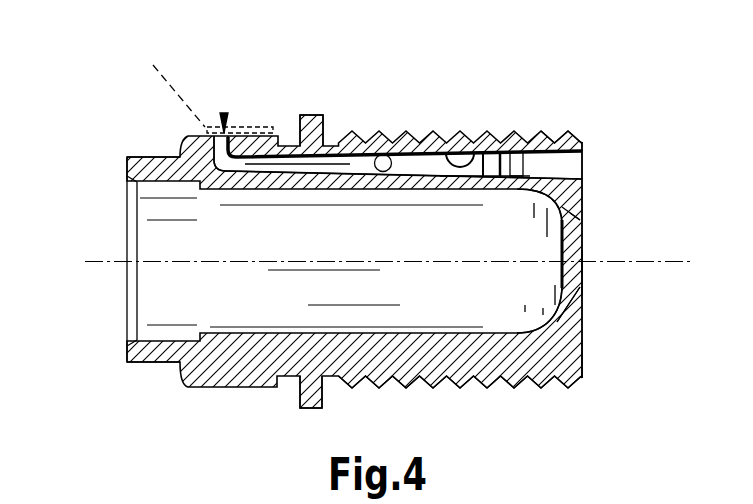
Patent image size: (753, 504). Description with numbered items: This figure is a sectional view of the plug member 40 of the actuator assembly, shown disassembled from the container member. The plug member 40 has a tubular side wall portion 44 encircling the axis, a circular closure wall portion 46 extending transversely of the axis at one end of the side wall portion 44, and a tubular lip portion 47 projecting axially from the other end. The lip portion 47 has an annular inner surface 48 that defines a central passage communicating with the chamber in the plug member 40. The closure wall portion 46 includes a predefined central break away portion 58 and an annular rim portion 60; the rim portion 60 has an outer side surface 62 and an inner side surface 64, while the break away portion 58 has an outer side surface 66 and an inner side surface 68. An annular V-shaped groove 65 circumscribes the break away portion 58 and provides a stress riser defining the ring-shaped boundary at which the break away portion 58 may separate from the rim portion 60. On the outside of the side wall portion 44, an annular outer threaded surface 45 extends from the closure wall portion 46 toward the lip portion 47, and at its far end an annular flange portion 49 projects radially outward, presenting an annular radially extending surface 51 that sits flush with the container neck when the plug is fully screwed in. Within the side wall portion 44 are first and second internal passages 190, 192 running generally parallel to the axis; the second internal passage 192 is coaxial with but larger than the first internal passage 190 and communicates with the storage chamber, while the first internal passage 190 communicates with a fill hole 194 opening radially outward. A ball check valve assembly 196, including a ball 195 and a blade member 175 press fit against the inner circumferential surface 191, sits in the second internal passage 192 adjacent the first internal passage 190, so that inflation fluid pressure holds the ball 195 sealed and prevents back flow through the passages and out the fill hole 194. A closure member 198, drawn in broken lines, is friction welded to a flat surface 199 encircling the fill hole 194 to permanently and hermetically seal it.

The plug member 40 is at (500, 410).
The tubular side wall portion 44 is at (413, 386).
The annular outer threaded surface 45 is at (519, 386).
The circular closure wall portion 46 is at (582, 196).
The tubular lip portion 47 is at (150, 350).
The annular inner surface 48 is at (160, 342).
The annular flange portion 49 is at (304, 115).
The annular radially extending surface 51 is at (298, 395).
The central break away portion 58 is at (578, 246).
The annular rim portion 60 is at (581, 322).
The outer side surface 62 is at (582, 207).
The inner side surface 64 is at (528, 150).
The annular V-shaped groove 65 is at (579, 225).
The outer side surface 66 is at (583, 271).
The inner side surface 68 is at (560, 252).
The blade member 175 is at (499, 152).
The first internal passage 190 is at (377, 155).
The inner circumferential surface 191 is at (565, 135).
The second internal passage 192 is at (485, 152).
The fill hole 194 is at (224, 113).
The ball 195 is at (400, 138).
The ball check valve assembly 196 is at (410, 136).
The closure member 198 is at (165, 84).
The flat surface 199 is at (272, 134).